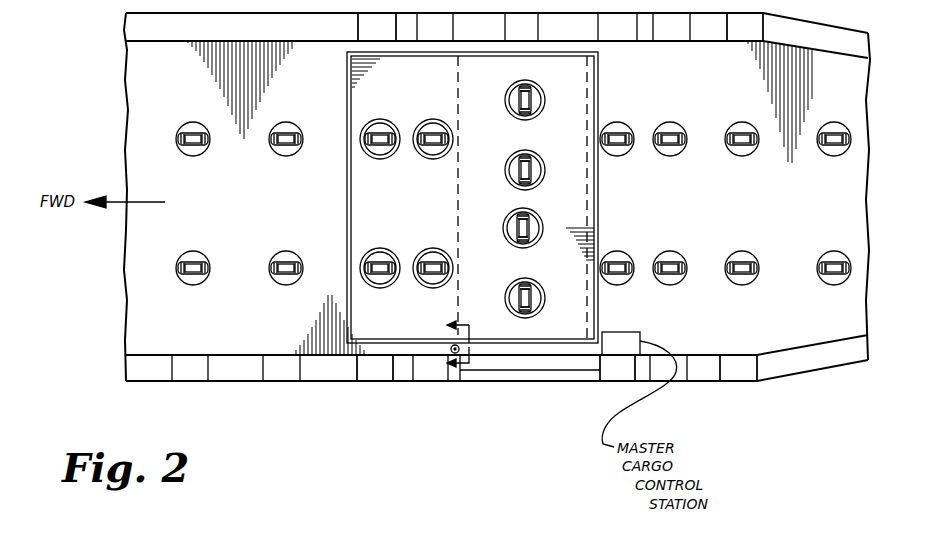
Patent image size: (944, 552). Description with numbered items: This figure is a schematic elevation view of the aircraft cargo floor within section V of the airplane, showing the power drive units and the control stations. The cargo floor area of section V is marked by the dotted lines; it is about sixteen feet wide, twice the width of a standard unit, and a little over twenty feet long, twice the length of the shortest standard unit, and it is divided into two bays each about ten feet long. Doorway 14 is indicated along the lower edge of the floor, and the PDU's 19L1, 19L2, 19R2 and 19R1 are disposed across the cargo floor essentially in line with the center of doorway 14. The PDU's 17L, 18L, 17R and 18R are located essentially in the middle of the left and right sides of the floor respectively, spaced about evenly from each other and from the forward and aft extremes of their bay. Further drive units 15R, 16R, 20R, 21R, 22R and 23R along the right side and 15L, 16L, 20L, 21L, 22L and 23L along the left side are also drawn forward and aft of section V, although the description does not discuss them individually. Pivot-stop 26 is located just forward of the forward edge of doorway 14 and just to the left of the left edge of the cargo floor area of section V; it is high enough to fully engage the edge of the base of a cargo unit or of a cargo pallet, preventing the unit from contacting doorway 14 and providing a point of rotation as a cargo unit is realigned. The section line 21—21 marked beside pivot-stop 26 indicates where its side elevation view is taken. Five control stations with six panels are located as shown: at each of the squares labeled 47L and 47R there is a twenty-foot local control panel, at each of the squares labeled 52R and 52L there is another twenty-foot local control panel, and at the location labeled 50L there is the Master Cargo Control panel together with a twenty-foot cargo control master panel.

The section V is at (598, 82).
The doorway 14 is at (460, 381).
The right cargo restraint unit 15R is at (194, 122).
The right cargo restraint unit 16R is at (287, 122).
The PDU 17R is at (381, 119).
The PDU 18R is at (434, 119).
The PDU 19R1 is at (540, 92).
The PDU 19R2 is at (540, 162).
The PDU 19L1 is at (541, 289).
The PDU 19L2 is at (539, 219).
The right cargo restraint unit 20R is at (618, 122).
The right cargo restraint unit 21R is at (671, 122).
The right cargo restraint unit 22R is at (743, 122).
The right cargo restraint unit 23R is at (835, 122).
The left cargo restraint unit 15L is at (193, 285).
The left cargo restraint unit 16L is at (286, 285).
The PDU 17L is at (379, 288).
The PDU 18L is at (431, 288).
The left cargo restraint unit 20L is at (617, 285).
The left cargo restraint unit 21L is at (670, 285).
The left cargo restraint unit 22L is at (742, 285).
The left cargo restraint unit 23L is at (834, 285).
The section line 21 is at (445, 348).
The pivot-stop 26 is at (450, 349).
The control panel location 47R is at (377, 27).
The control panel location 47L is at (375, 368).
The Master Cargo Control panel location 50L is at (617, 368).
The control panel location 52R is at (745, 27).
The control panel location 52L is at (738, 368).